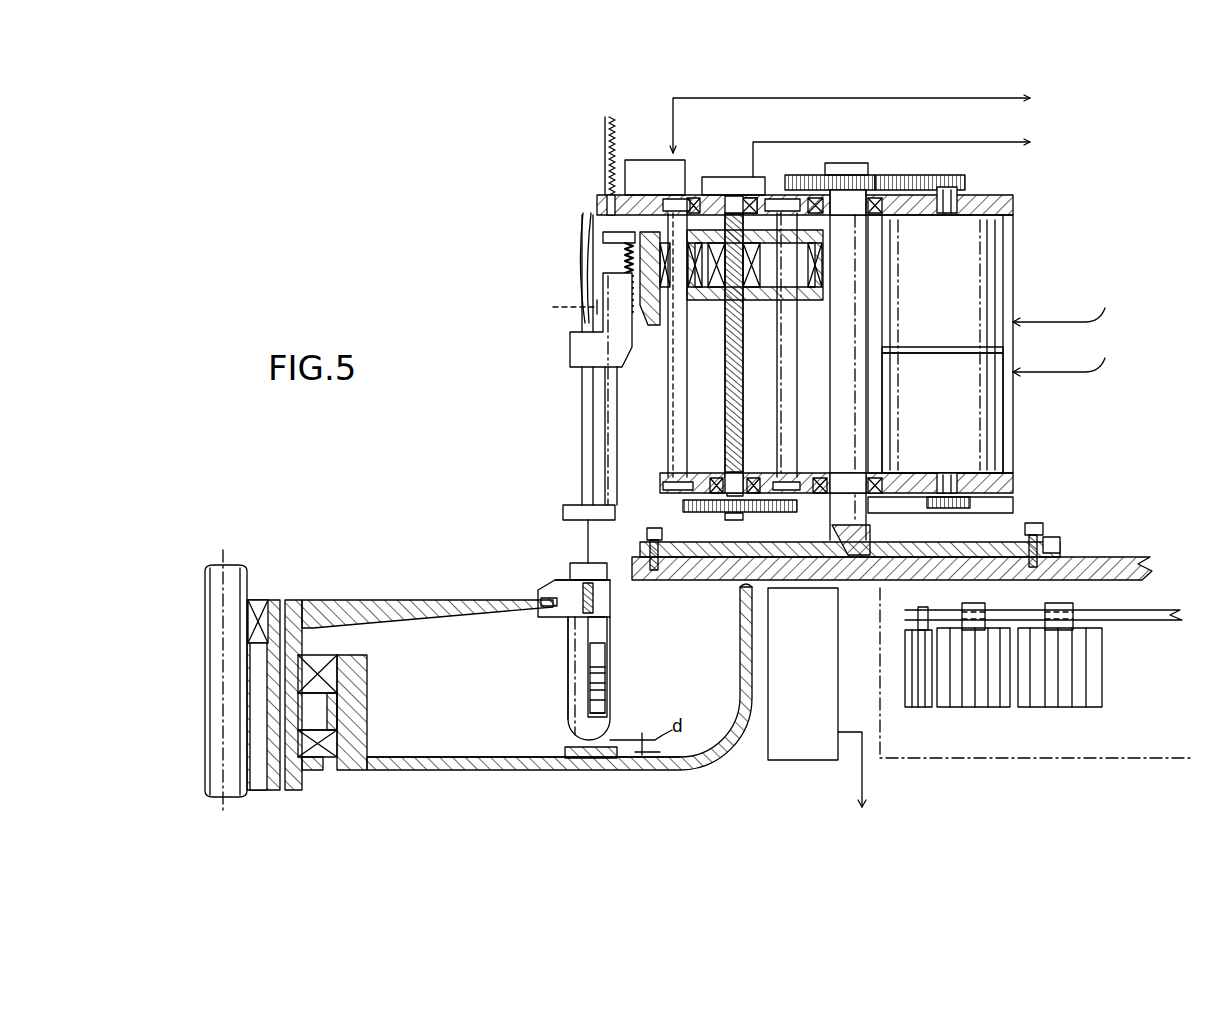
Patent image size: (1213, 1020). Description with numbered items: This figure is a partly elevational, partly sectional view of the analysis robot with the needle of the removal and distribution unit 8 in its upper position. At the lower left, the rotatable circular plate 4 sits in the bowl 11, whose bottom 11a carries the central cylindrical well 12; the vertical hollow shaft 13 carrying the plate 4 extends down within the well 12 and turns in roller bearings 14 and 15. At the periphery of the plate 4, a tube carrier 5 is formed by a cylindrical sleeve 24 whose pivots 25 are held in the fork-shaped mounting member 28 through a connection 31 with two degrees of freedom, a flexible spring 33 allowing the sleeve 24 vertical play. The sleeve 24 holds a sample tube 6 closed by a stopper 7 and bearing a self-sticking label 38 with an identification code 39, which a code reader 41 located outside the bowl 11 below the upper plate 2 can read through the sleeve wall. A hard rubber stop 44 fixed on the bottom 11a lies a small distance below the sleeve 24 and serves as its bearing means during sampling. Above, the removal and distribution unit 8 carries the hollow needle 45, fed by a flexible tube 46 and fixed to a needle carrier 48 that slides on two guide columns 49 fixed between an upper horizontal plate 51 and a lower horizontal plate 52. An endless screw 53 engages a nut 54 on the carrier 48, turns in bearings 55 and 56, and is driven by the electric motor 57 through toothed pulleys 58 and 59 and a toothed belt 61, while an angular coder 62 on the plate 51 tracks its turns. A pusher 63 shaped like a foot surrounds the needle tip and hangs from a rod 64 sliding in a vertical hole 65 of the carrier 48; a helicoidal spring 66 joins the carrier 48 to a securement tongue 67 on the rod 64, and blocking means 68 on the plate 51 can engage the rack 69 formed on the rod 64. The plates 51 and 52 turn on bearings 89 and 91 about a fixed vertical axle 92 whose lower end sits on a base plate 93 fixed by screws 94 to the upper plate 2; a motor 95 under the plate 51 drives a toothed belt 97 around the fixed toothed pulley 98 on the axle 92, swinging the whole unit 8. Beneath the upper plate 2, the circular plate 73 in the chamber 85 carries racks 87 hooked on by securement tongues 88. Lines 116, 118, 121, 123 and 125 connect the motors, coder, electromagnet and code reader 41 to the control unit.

The upper plate 2 is at (1117, 550).
The rotatable circular plate 4 is at (400, 597).
The tube carrier 5 is at (568, 682).
The sample tube 6 is at (607, 631).
The stopper 7 is at (585, 562).
The removal and distribution unit 8 is at (512, 205).
The bowl 11 is at (428, 775).
The bottom of the bowl 11a is at (418, 760).
The cylindrical well 12 is at (355, 720).
The vertical hollow shaft 13 is at (293, 787).
The roller bearing 14 is at (330, 683).
The roller bearing 15 is at (318, 755).
The cylindrical sleeve 24 is at (568, 660).
The pivot 25 is at (572, 575).
The mounting member 28 is at (547, 588).
The connection with two degrees of freedom 31 is at (605, 598).
The flexible spring 33 is at (578, 603).
The self-sticking label 38 is at (607, 703).
The identification code 39 is at (607, 677).
The code reader 41 is at (800, 750).
The stop 44 is at (575, 747).
The hollow needle 45 is at (582, 428).
The flexible tube 46 is at (583, 268).
The needle carrier 48 is at (570, 350).
The guide column 49 is at (668, 405).
The upper horizontal plate 51 is at (1015, 203).
The lower horizontal plate 52 is at (1015, 486).
The endless screw 53 is at (725, 395).
The nut 54 is at (720, 300).
The bearing 55 is at (692, 195).
The bearing 56 is at (720, 473).
The electric motor 57 is at (1000, 408).
The toothed pulley 58 is at (960, 510).
The toothed pulley 59 is at (770, 512).
The toothed belt 61 is at (887, 505).
The angular coder 62 is at (735, 177).
The pusher 63 is at (567, 507).
The rod 64 is at (613, 392).
The vertical hole 65 is at (562, 307).
The helicoidal spring 66 is at (622, 262).
The securement tongue 67 is at (603, 236).
The blocking means 68 is at (652, 160).
The rack 69 is at (612, 132).
The plate 73 is at (1157, 617).
The chamber 85 is at (1015, 760).
The rack 87 is at (917, 702).
The securement tongue 88 is at (920, 610).
The bearing 89 is at (878, 212).
The bearing 91 is at (882, 478).
The fixed vertical axle 92 is at (832, 336).
The base plate 93 is at (1062, 552).
The screw 94 is at (655, 528).
The electric motor 95 is at (1000, 283).
The toothed belt 97 is at (905, 175).
The toothed pulley 98 is at (794, 175).
The line 116 is at (1078, 362).
The line 118 is at (1077, 311).
The line 121 is at (1010, 145).
The line 123 is at (1008, 100).
The line 125 is at (866, 788).